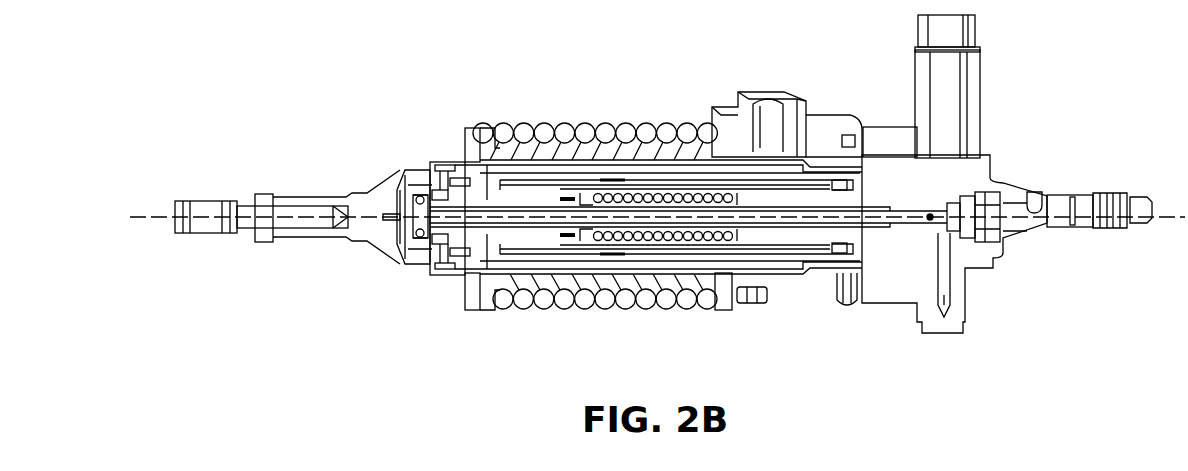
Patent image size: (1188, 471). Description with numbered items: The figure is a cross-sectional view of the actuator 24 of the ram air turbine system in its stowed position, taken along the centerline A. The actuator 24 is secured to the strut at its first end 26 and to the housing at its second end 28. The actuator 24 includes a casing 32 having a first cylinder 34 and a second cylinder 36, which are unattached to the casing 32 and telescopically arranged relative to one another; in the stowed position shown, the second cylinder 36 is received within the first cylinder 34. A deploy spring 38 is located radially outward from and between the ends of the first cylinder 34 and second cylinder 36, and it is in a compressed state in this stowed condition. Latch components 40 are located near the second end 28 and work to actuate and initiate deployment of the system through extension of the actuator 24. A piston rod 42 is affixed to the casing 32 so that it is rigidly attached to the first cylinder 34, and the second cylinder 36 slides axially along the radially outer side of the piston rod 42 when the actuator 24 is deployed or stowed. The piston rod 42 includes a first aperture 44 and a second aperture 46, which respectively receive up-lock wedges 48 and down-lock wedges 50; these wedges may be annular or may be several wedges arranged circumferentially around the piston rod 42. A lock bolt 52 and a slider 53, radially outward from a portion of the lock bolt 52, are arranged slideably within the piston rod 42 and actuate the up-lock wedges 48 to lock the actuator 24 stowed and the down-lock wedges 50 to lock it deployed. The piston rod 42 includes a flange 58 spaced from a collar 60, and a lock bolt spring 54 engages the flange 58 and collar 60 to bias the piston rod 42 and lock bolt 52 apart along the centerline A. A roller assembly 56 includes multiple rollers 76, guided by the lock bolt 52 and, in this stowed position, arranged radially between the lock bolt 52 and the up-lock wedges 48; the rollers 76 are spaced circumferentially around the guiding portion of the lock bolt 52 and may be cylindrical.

The centerline A is at (152, 216).
The actuator 24 is at (699, 92).
The first end 26 is at (239, 191).
The second end 28 is at (1114, 183).
The casing 32 is at (868, 125).
The first cylinder 34 is at (725, 282).
The second cylinder 36 is at (378, 245).
The deploy spring 38 is at (583, 127).
The latch components 40 is at (989, 156).
The piston rod 42 is at (566, 250).
The first aperture 44 is at (415, 190).
The second aperture 46 is at (478, 170).
The up-lock wedges 48 is at (424, 192).
The down-lock wedges 50 is at (487, 160).
The lock bolt 52 is at (440, 195).
The slider 53 is at (490, 278).
The lock bolt spring 54 is at (640, 241).
The roller assembly 56 is at (420, 266).
The flange 58 is at (593, 180).
The collar 60 is at (760, 248).
The rollers 76 is at (398, 214).